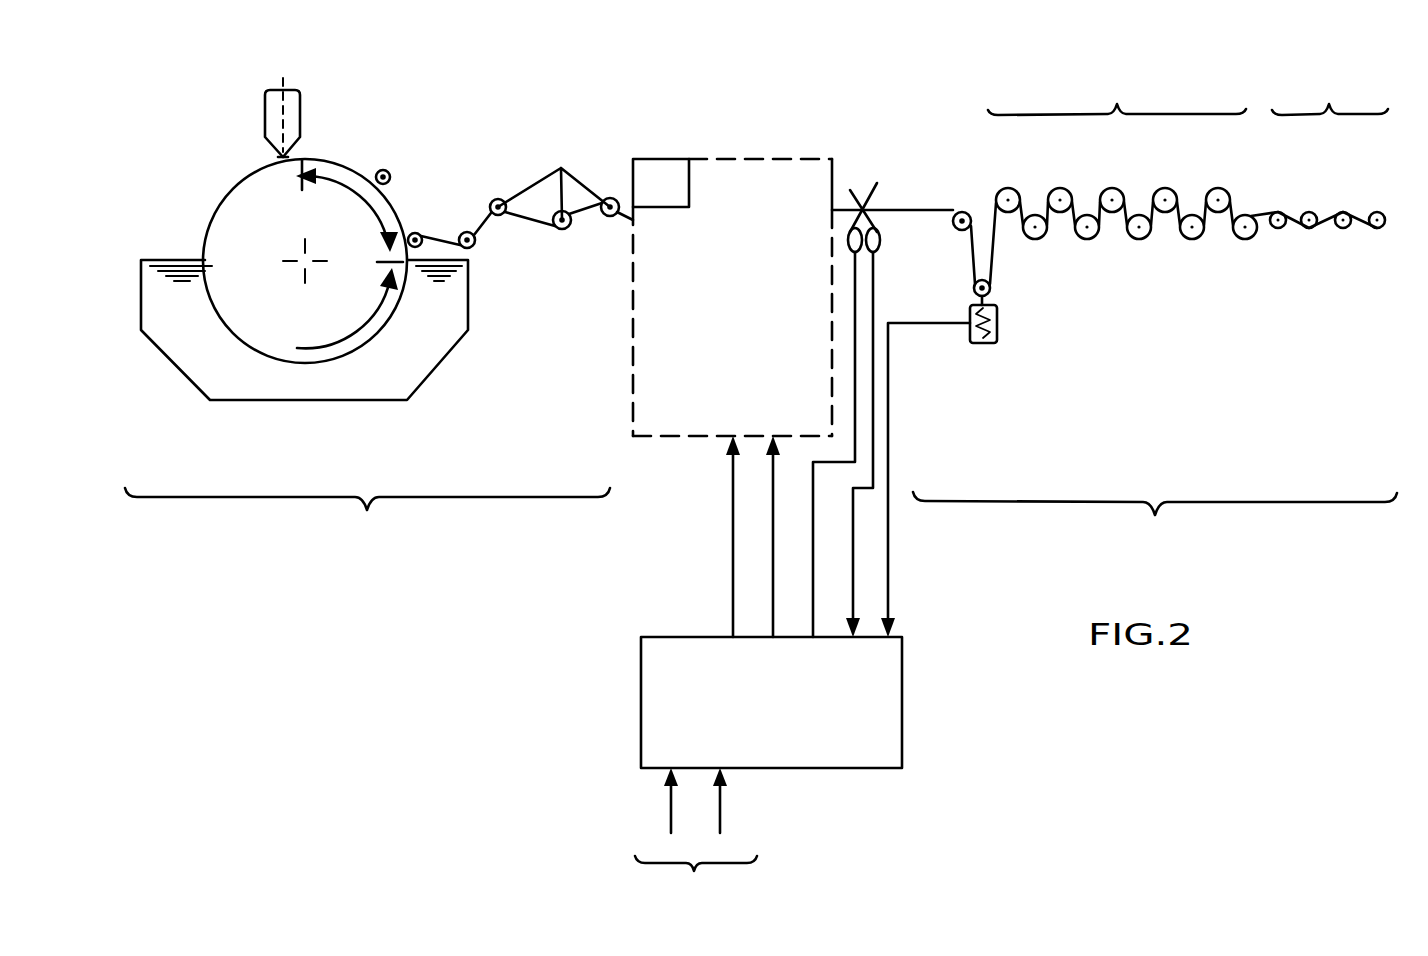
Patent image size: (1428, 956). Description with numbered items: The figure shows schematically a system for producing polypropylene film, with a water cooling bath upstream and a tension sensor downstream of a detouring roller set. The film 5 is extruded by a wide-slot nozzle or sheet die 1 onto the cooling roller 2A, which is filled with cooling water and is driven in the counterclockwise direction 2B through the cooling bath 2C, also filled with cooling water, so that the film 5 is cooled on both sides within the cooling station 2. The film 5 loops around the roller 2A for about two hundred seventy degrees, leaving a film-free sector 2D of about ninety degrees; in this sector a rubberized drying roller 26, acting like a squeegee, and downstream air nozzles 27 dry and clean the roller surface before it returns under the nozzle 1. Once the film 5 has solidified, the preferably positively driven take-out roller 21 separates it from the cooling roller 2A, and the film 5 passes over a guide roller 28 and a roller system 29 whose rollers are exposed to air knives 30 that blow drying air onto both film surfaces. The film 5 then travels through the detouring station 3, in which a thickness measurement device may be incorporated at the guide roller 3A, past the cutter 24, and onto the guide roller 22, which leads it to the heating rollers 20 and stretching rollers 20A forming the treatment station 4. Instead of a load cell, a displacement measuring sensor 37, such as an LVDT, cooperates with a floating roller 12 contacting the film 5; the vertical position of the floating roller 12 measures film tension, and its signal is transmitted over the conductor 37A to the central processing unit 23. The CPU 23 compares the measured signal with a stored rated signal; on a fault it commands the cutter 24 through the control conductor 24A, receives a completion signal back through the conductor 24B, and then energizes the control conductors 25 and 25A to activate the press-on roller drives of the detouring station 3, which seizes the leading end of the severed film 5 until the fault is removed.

The nozzle or sheet die 1 is at (283, 100).
The cooling station 2 is at (367, 523).
The cooling roller 2A is at (265, 318).
The counterclockwise rotation direction 2B is at (300, 350).
The cooling bath 2C is at (176, 300).
The film-free sector 2D is at (364, 204).
The detouring station 3 is at (796, 185).
The guide roller 3A is at (648, 173).
The treatment station 4 is at (1155, 524).
The film 5 is at (272, 157).
The floating roller 12 is at (990, 290).
The heating rollers 20 is at (1122, 153).
The stretching rollers 20A is at (1319, 148).
The take-out roller 21 is at (414, 232).
The guide or sensor roller 22 is at (966, 212).
The central processing unit 23 is at (880, 667).
The cutter 24 is at (875, 195).
The control conductor 24A is at (813, 545).
The conductor 24B is at (853, 580).
The control conductor 25 is at (733, 537).
The control conductor 25A is at (773, 578).
The drying roller 26 is at (385, 170).
The air nozzles 27 is at (351, 158).
The guide roller 28 is at (473, 247).
The roller system 29 is at (561, 168).
The air knives 30 is at (470, 216).
The displacement measuring sensor 37 is at (997, 330).
The tension signal line 37A is at (888, 437).